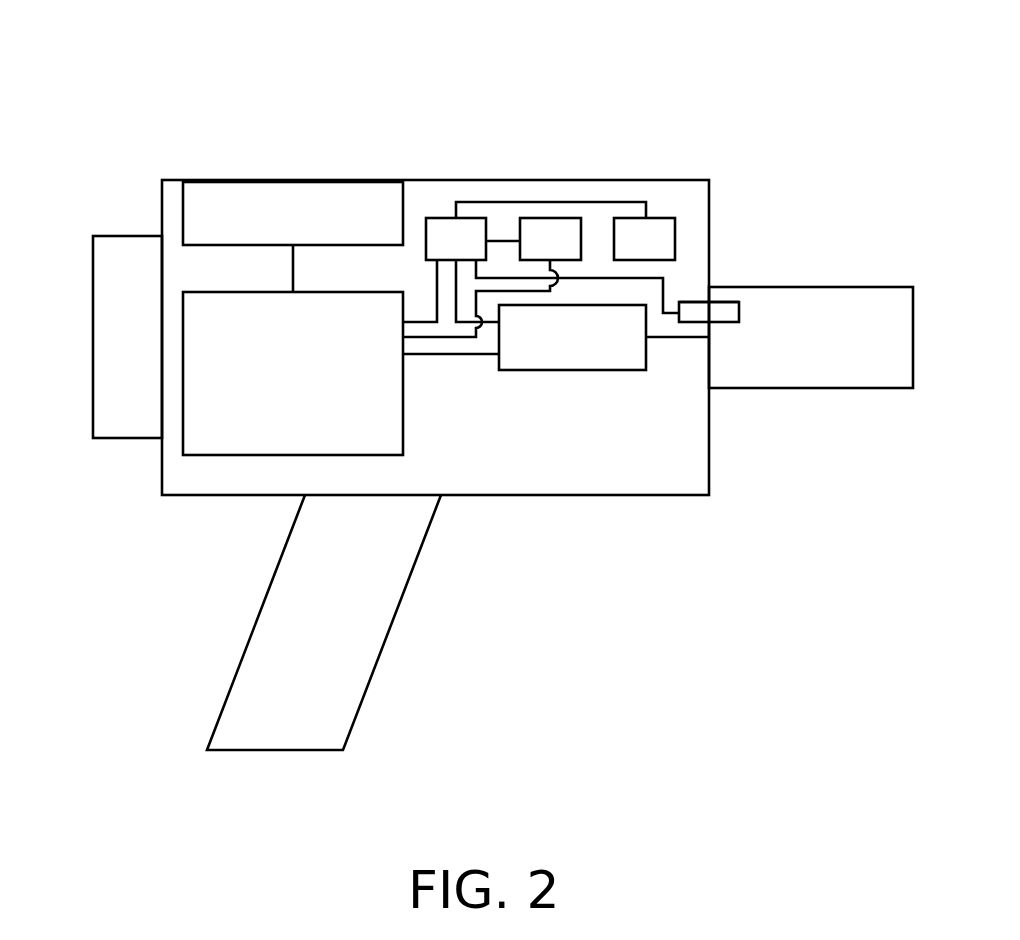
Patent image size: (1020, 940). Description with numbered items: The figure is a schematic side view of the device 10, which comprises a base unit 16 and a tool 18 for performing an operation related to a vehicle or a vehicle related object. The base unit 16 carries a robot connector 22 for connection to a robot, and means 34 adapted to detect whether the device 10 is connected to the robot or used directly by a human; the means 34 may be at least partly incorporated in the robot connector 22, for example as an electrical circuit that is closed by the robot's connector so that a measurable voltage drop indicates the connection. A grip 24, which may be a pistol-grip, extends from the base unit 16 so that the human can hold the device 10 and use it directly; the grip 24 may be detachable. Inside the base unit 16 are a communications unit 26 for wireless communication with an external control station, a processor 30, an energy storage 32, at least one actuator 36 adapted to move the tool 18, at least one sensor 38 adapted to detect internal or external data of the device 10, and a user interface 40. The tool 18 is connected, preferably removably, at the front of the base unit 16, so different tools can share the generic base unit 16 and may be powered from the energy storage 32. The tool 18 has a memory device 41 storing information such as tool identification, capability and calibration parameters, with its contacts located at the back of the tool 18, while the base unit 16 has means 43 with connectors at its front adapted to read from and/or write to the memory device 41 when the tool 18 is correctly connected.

The device 10 is at (203, 118).
The base unit 16 is at (575, 495).
The tool 18 is at (812, 287).
The robot connector 22 is at (97, 296).
The means adapted to detect whether the device is connected to the robot or used dir 34 is at (120, 236).
The grip 24 is at (393, 622).
The communications unit 26 is at (536, 254).
The processor 30 is at (442, 254).
The energy storage 32 is at (273, 387).
The actuator 36 is at (558, 352).
The sensor 38 is at (630, 254).
The user interface 40 is at (273, 227).
The memory device 41 is at (724, 302).
The means adapted to read information from and/or write information to the memory de 43 is at (692, 302).